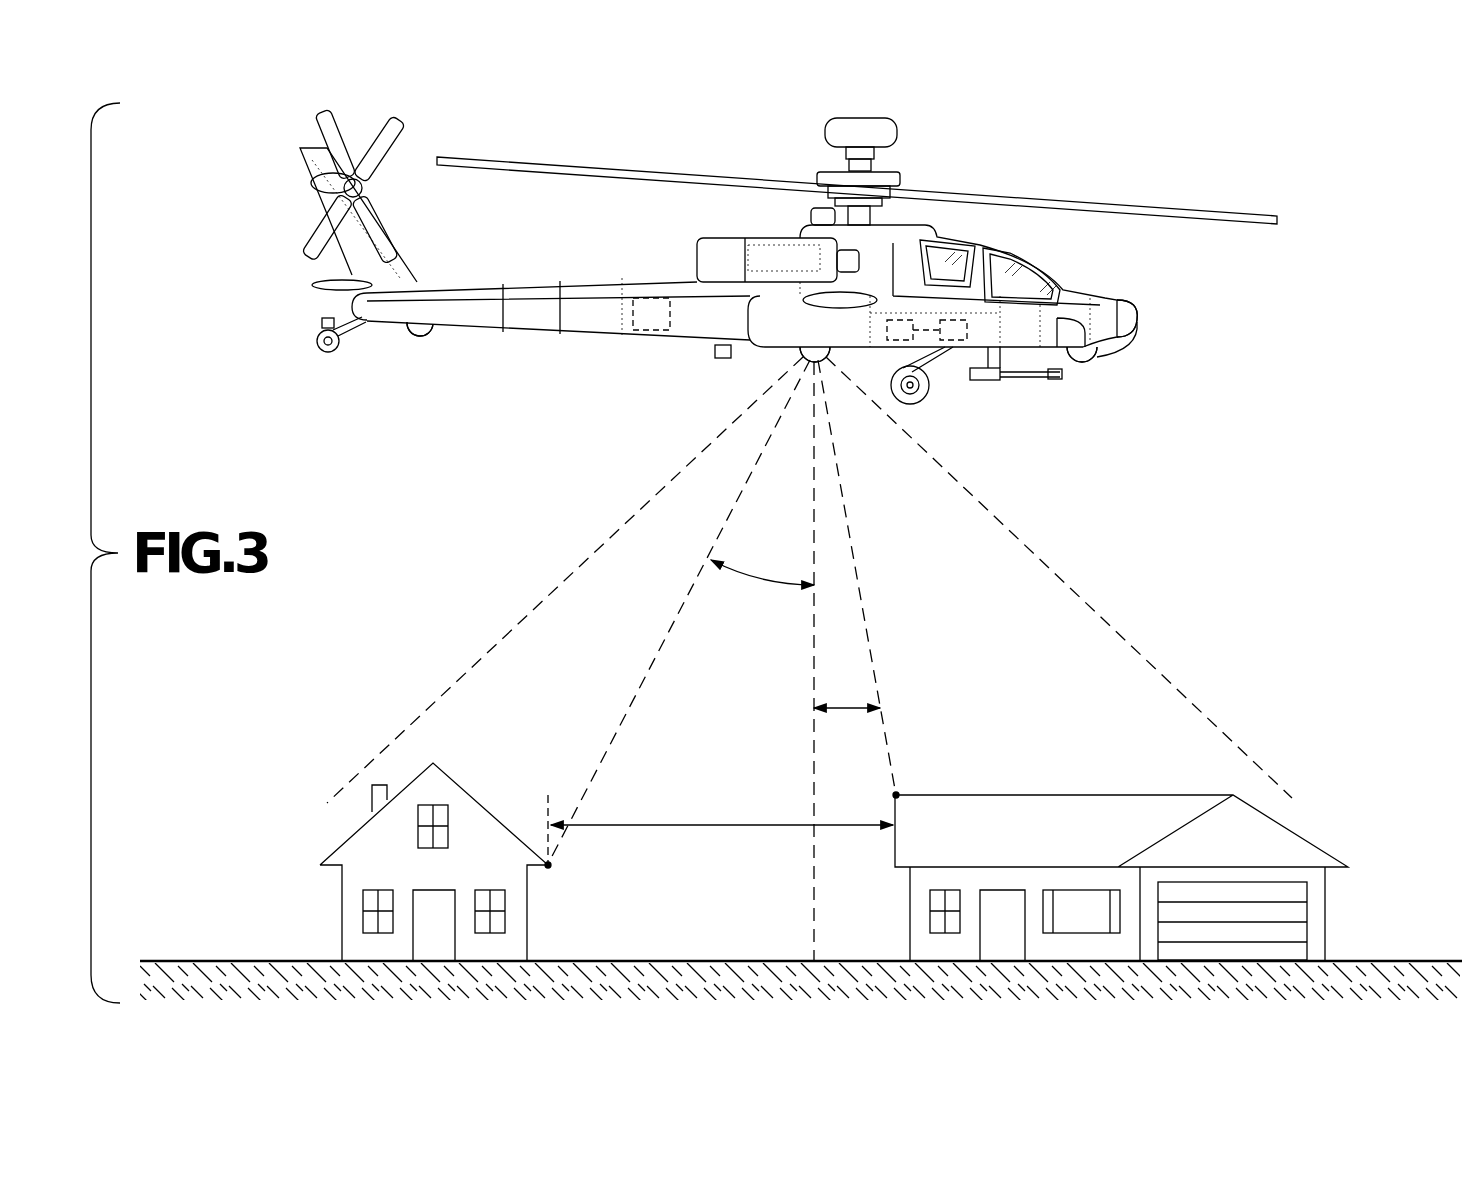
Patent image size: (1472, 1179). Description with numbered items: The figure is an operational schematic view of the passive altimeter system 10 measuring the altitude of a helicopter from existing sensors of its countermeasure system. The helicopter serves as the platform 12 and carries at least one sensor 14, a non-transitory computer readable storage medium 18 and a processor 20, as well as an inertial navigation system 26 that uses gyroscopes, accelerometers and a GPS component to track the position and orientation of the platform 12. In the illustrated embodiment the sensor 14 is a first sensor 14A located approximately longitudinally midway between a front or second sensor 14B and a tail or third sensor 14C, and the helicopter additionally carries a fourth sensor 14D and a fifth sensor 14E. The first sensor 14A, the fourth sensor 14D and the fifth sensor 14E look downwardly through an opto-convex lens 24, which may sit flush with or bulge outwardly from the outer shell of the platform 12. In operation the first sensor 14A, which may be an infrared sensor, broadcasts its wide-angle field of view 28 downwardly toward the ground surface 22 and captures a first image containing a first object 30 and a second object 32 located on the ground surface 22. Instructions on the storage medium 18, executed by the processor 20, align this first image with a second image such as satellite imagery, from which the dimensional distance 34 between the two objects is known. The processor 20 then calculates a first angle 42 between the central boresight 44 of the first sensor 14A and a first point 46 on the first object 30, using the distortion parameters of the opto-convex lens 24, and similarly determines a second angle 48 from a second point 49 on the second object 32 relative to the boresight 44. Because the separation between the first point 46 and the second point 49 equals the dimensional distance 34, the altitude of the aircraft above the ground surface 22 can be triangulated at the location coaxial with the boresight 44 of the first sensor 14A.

The passive altimeter system 10 is at (790, 289).
The platform 12 is at (1098, 292).
The sensor 14 is at (717, 376).
The first sensor 14A is at (800, 357).
The second sensor 14B is at (1140, 312).
The third sensor 14C is at (343, 297).
The fourth sensor 14D is at (1092, 362).
The fifth sensor 14E is at (413, 345).
The non-transitory computer readable storage medium 18 is at (957, 342).
The processor 20 is at (898, 342).
The ground surface 22 is at (678, 957).
The opto-convex lens 24 is at (425, 341).
The inertial navigation system 26 is at (648, 306).
The wide-angle field of view 28 is at (583, 562).
The first object 30 is at (458, 777).
The second object 32 is at (1052, 792).
The dimensional distance 34 is at (730, 825).
The first angle 42 is at (768, 580).
The central boresight 44 is at (813, 634).
The first point 46 is at (550, 868).
The second angle 48 is at (847, 706).
The second point 49 is at (898, 794).